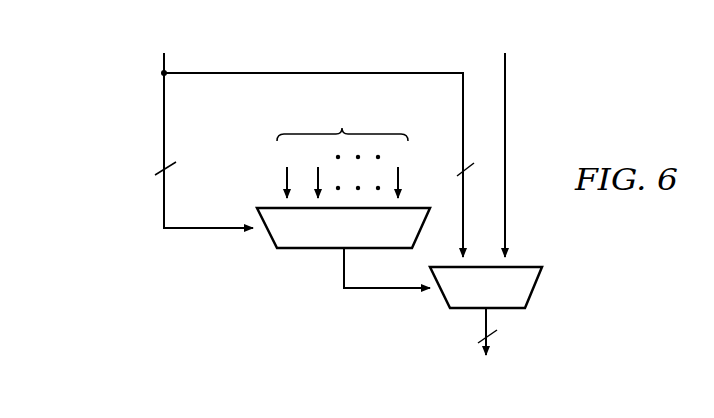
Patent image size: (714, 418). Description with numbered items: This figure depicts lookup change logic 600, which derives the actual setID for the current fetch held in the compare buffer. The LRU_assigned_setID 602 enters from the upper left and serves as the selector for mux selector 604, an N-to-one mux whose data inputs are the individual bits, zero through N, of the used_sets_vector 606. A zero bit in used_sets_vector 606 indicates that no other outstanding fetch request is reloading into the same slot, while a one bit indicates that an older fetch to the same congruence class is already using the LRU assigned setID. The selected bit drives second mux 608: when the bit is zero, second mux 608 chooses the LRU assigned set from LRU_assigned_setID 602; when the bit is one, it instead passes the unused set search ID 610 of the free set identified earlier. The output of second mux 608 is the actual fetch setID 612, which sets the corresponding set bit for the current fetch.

The lookup change logic 600 is at (231, 314).
The LRU_assigned_setID 602 is at (74, 37).
The mux selector 604 is at (301, 250).
The used_sets_vector 606 is at (242, 112).
The second mux 608 is at (533, 292).
The unused set search ID 610 is at (615, 35).
The actual fetch setID 612 is at (583, 382).